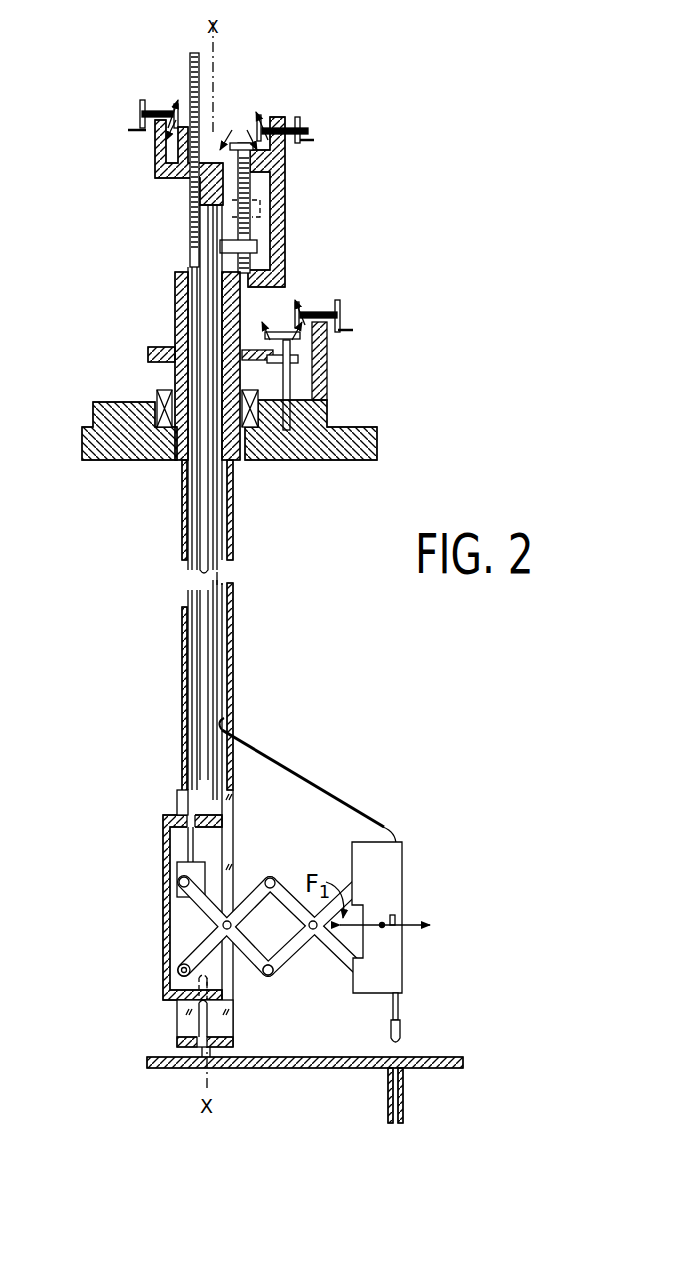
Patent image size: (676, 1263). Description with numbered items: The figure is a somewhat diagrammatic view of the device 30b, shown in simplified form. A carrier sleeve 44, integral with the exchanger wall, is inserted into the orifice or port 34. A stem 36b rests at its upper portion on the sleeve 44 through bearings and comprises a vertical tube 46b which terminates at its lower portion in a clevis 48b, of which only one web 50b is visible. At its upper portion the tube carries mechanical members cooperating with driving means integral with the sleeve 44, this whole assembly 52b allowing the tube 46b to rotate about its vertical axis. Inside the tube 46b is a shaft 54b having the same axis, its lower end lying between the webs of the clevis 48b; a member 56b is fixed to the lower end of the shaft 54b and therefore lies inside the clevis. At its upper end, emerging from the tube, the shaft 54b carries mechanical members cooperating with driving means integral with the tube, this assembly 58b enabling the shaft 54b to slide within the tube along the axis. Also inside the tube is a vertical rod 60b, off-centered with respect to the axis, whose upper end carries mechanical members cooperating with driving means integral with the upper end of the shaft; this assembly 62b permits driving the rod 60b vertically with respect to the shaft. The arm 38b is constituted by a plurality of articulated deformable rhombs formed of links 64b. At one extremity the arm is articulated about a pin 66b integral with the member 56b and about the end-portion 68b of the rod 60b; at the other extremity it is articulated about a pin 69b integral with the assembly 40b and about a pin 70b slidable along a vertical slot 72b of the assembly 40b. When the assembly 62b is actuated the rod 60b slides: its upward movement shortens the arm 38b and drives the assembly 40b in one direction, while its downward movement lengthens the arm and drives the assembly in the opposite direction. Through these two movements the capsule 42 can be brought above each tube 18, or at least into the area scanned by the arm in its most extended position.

The tube 18 is at (405, 1093).
The device 30b is at (256, 658).
The orifice or port 34 is at (240, 462).
The stem 36b is at (181, 650).
The arm 38b is at (280, 872).
The assembly 40b is at (388, 965).
The capsule 42 is at (400, 1035).
The carrier sleeve 44 is at (160, 440).
The vertical tube 46b is at (235, 550).
The clevis 48b is at (241, 803).
The web of clevis 50b is at (178, 1025).
The assembly of driving members 52b is at (340, 312).
The shaft 54b is at (210, 520).
The member 56b is at (166, 898).
The assembly of driving members 58b is at (300, 125).
The vertical rod 60b is at (193, 262).
The assembly of driving members 62b is at (145, 108).
The links 64b is at (292, 955).
The pin 66b is at (178, 966).
The end-portion of rod 68b is at (183, 865).
The pin 69b is at (365, 995).
The pin 70b is at (364, 884).
The vertical slot 72b is at (395, 843).